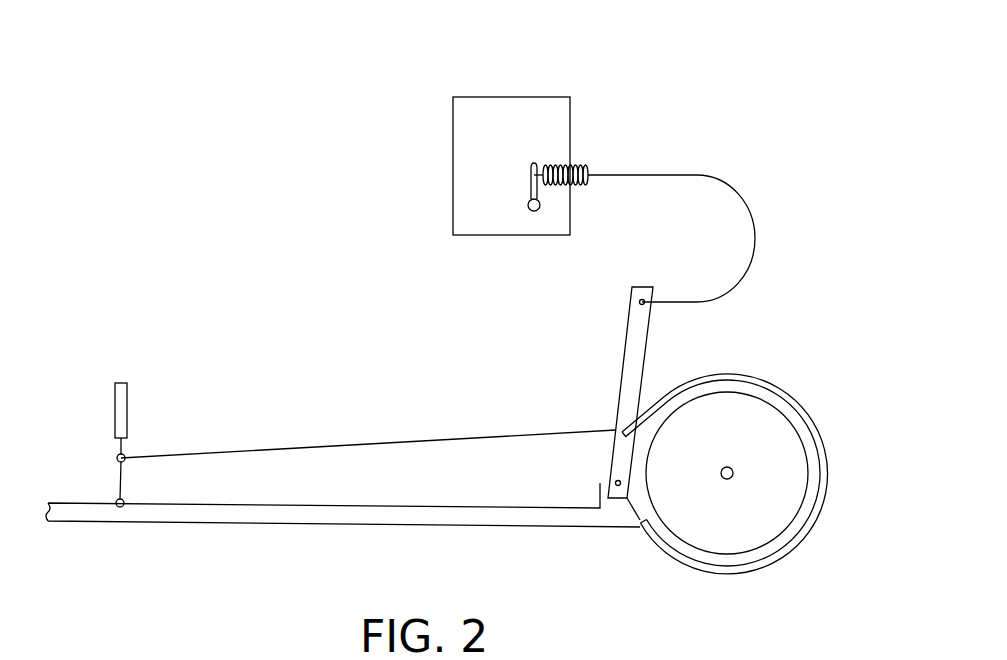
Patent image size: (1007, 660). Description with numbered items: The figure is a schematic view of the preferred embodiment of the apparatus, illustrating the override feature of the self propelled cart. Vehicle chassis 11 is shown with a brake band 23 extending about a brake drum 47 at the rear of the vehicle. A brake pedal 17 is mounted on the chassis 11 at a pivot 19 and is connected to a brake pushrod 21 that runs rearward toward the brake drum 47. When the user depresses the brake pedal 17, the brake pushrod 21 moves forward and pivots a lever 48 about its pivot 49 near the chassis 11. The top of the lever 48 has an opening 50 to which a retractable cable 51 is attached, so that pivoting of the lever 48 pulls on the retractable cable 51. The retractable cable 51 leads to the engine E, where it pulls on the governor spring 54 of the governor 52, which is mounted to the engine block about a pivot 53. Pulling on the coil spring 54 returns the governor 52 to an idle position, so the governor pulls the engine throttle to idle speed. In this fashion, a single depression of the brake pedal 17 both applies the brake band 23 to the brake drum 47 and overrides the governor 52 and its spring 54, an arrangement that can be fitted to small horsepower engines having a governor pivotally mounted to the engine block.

The engine E is at (480, 112).
The governor spring 54 is at (558, 164).
The governor 52 is at (530, 196).
The pivot 53 is at (538, 212).
The retractable cable 51 is at (748, 203).
The opening 50 is at (641, 297).
The lever 48 is at (634, 355).
The pivot 49 is at (616, 483).
The brake drum 47 is at (740, 533).
The brake band 23 is at (794, 393).
The chassis 11 is at (350, 515).
The brake pushrod 21 is at (448, 437).
The brake pedal 17 is at (128, 403).
The pivot 19 is at (124, 499).